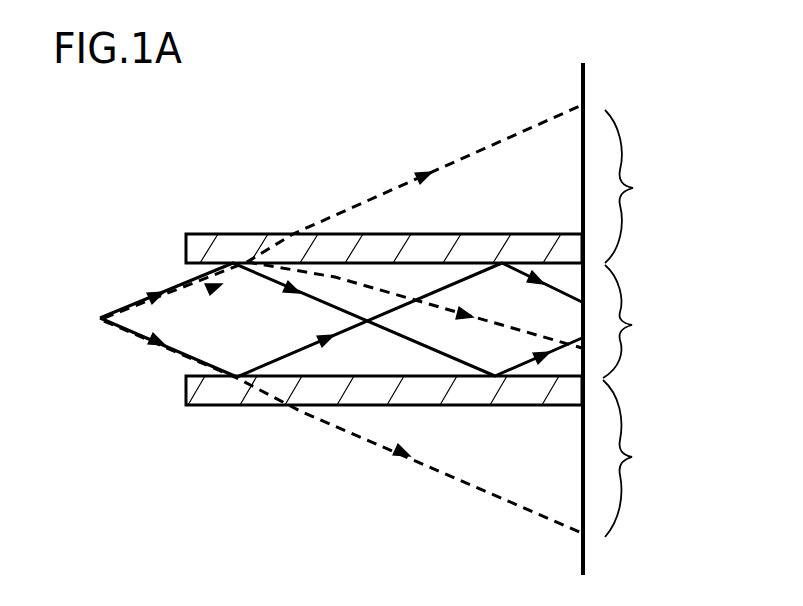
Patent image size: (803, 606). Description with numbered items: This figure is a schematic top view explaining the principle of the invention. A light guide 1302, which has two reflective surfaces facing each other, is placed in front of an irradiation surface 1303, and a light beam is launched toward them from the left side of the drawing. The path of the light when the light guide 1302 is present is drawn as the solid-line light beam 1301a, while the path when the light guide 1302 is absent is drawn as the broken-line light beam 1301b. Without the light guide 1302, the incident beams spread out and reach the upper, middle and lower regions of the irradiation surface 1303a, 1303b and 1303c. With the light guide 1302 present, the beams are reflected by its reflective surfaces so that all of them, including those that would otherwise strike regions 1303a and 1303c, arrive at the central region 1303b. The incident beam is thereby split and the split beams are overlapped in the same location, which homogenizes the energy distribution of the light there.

The light beam (solid line) 1301a is at (297, 350).
The light beam (broken line) 1301b is at (472, 156).
The light guide 1302 is at (227, 235).
The irradiation surface 1303 is at (583, 80).
The region of the irradiation surface 1303a is at (669, 186).
The region of the irradiation surface 1303b is at (670, 321).
The region of the irradiation surface 1303c is at (670, 458).